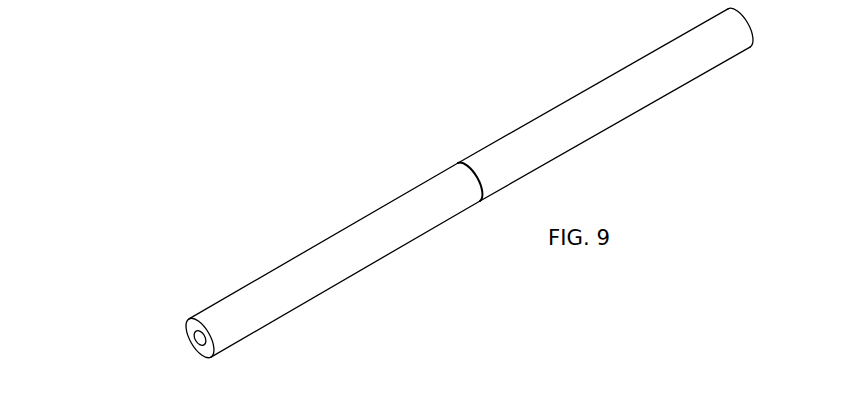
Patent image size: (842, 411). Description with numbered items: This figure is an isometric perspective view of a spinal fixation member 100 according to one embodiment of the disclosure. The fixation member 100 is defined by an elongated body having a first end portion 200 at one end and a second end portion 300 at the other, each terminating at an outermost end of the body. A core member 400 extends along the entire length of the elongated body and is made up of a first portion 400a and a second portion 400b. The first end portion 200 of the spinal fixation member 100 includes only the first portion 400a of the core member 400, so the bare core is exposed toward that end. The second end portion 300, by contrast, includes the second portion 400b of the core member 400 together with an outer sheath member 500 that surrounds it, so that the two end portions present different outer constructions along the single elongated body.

The fixation member 100 is at (425, 185).
The first end portion 200 is at (605, 104).
The second end portion 300 is at (405, 257).
The core member 400 is at (497, 122).
The first portion of core member 400a is at (597, 85).
The second portion of core member 400b is at (196, 342).
The outer sheath member 500 is at (295, 262).